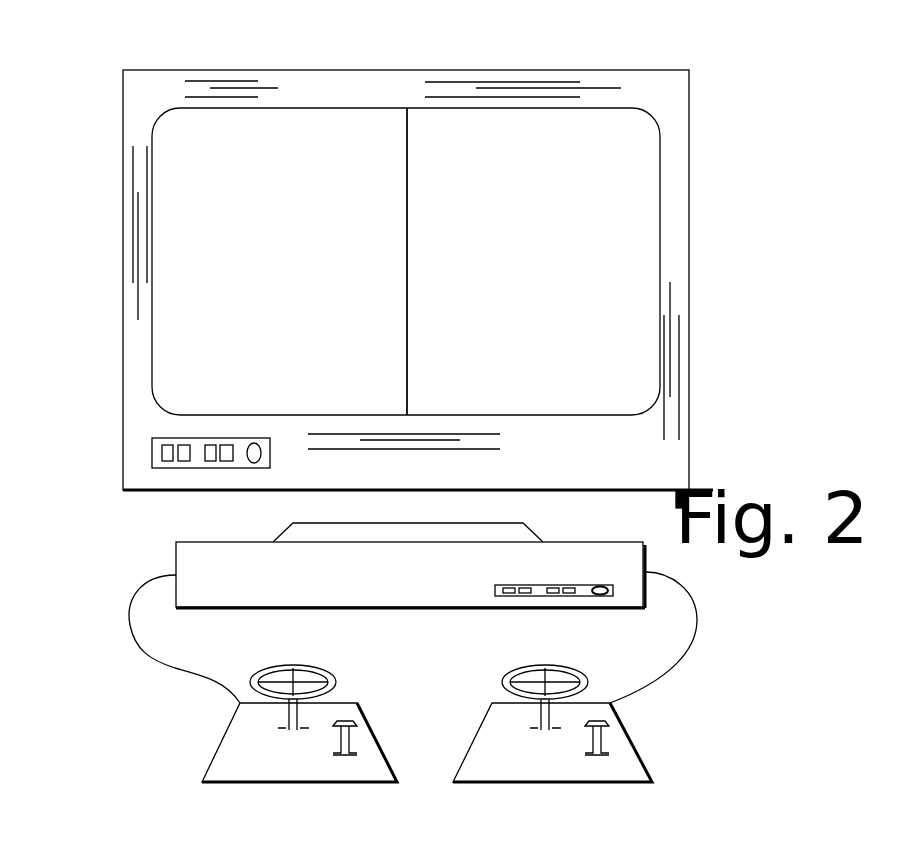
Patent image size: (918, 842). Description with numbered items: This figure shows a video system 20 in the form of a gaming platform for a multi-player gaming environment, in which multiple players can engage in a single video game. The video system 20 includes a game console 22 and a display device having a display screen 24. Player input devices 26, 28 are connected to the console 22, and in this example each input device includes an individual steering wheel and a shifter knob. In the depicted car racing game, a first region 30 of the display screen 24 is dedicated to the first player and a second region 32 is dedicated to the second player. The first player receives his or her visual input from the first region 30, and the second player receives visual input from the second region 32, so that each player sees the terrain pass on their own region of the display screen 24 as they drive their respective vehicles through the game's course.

The video system 20 is at (123, 70).
The game console 22 is at (176, 542).
The display screen 24 is at (369, 108).
The player input device 26 is at (222, 740).
The player input device 28 is at (474, 740).
The first region 30 is at (301, 283).
The second region 32 is at (543, 283).